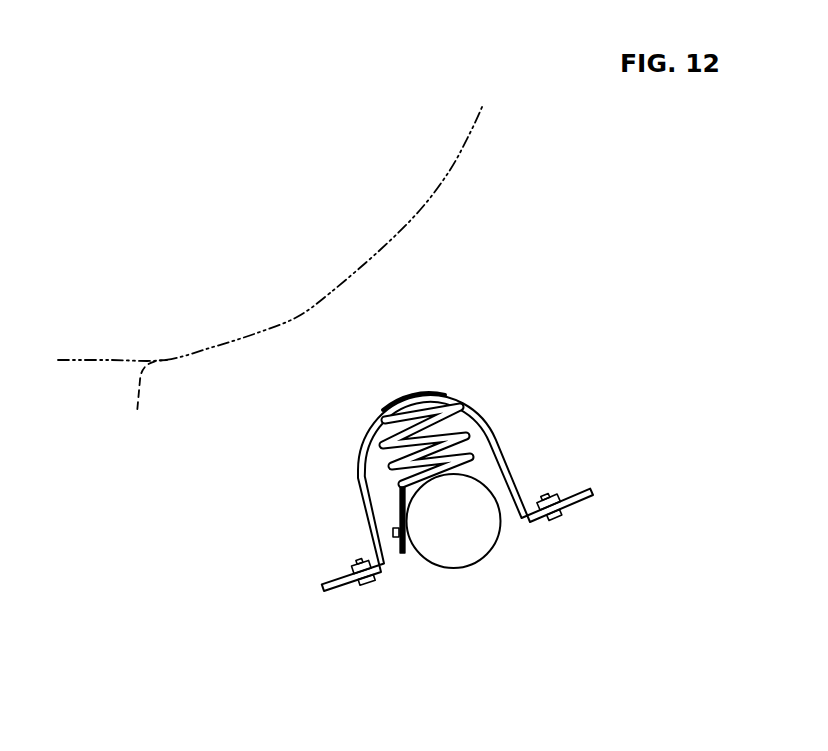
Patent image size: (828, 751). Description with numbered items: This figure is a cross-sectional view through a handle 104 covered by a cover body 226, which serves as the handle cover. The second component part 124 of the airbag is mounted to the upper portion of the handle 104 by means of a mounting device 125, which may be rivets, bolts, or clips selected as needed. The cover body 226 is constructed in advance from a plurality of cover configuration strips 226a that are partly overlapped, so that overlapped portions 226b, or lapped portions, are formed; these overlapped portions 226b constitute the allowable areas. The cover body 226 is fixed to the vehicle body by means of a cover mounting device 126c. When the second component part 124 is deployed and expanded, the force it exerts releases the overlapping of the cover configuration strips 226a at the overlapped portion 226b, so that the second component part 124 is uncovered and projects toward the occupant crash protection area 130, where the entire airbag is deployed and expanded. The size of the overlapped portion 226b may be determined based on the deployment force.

The handle 104 is at (500, 520).
The second component part 124 is at (457, 408).
The mounting device 125 is at (402, 575).
The cover mounting device 126c is at (335, 569).
The occupant crash protection area 130 is at (270, 284).
The cover body 226 is at (425, 476).
The cover configuration strips 226a is at (358, 478).
The overlapped portions 226b is at (386, 394).